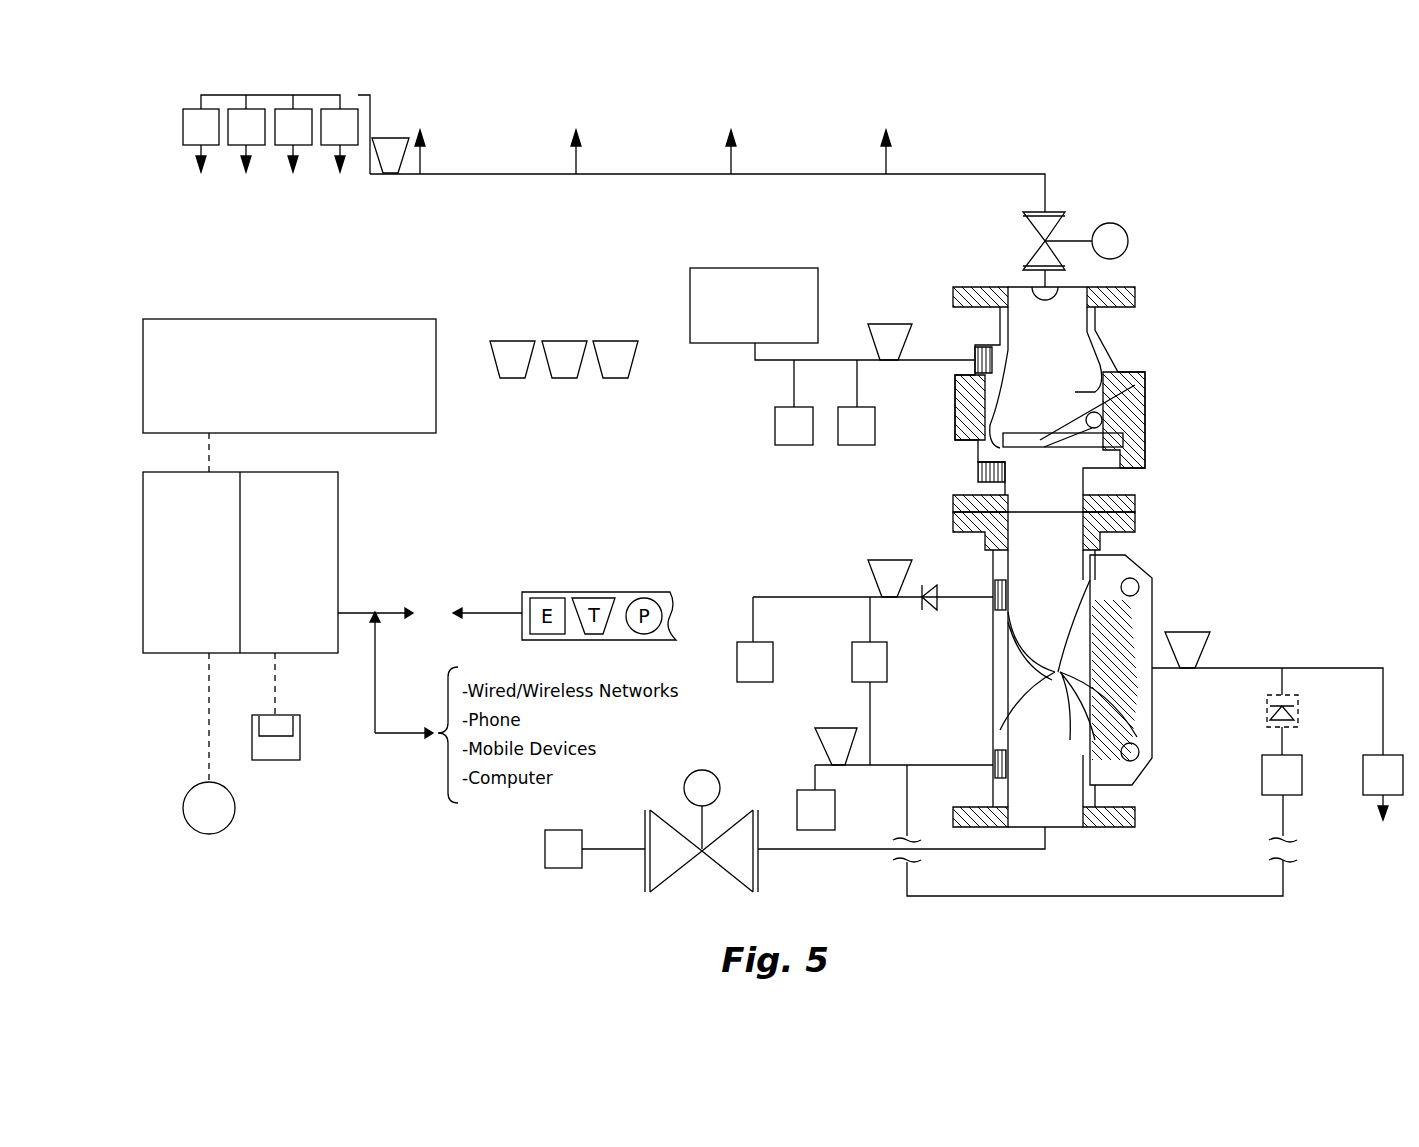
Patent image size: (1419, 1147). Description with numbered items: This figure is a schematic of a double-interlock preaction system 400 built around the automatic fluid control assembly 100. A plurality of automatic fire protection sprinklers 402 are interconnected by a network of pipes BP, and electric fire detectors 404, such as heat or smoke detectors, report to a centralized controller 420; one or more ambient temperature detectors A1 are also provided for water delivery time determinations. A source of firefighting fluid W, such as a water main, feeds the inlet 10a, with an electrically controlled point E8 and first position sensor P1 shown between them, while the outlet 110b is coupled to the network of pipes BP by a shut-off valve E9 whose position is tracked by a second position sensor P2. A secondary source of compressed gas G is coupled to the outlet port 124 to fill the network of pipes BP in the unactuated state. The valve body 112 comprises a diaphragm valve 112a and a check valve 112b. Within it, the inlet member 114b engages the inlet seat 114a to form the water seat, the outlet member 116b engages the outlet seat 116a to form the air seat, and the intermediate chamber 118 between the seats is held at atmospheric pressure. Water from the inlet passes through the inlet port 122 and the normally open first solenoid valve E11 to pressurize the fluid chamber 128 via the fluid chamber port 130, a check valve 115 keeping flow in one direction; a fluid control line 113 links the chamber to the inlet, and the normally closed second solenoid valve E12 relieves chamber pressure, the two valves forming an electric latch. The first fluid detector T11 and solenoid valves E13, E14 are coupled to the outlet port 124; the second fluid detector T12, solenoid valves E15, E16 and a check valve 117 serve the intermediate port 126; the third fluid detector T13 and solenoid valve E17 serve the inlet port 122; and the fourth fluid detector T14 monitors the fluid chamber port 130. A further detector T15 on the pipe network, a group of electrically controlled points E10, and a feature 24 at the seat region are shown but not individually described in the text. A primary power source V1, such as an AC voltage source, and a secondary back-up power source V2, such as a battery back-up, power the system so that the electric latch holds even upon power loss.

The double-interlock preaction system 400 is at (1237, 153).
The automatic fluid control assembly 100 is at (1250, 300).
The automatic fire protection sprinklers 402 is at (921, 143).
The fire detectors 404 is at (355, 318).
The controller 420 is at (338, 513).
The outlet 110b is at (1075, 282).
The outlet port 124 is at (966, 348).
The outlet seat 116a is at (978, 466).
The outlet member 116b is at (985, 420).
The valve body 112 is at (1119, 511).
The diaphragm valve 112a is at (1080, 534).
The check valve 112b is at (1135, 488).
The intermediate chamber 118 is at (1033, 546).
The intermediate port 126 is at (990, 590).
The check valve 117 is at (932, 612).
The valve seat 24 is at (1027, 676).
The fluid chamber 128 is at (1087, 654).
The fluid chamber port 130 is at (1162, 676).
The check valve 115 is at (1300, 710).
The inlet seat 114a is at (1062, 690).
The inlet member 114b is at (1130, 720).
The inlet port 122 is at (990, 765).
The fluid control line 113 is at (968, 896).
The inlet 10a is at (1067, 830).
The first fluid detector T11 is at (888, 322).
The second fluid detector T12 is at (878, 582).
The third fluid detector T13 is at (820, 745).
The fourth fluid detector T14 is at (1205, 652).
The temperature sensor T15 is at (393, 135).
The control valve E8 is at (655, 812).
The shut-off valve E9 is at (1050, 210).
The sprinkler heads E10 is at (358, 185).
The first solenoid valve E11 is at (1282, 775).
The second solenoid valve E12 is at (1383, 787).
The third solenoid valve E13 is at (856, 402).
The fourth solenoid valve E14 is at (794, 402).
The fifth solenoid valve E15 is at (755, 639).
The sixth solenoid valve E16 is at (870, 681).
The seventh solenoid valve E17 is at (816, 797).
The first position sensor P1 is at (702, 809).
The second position sensor P2 is at (1086, 241).
The network of pipes BP is at (990, 172).
The firefighting fluid source W is at (595, 849).
The compressed gas source G is at (832, 314).
The ambient temperature detectors A1 is at (478, 388).
The primary power source V1 is at (185, 789).
The secondary back-up power source V2 is at (187, 822).